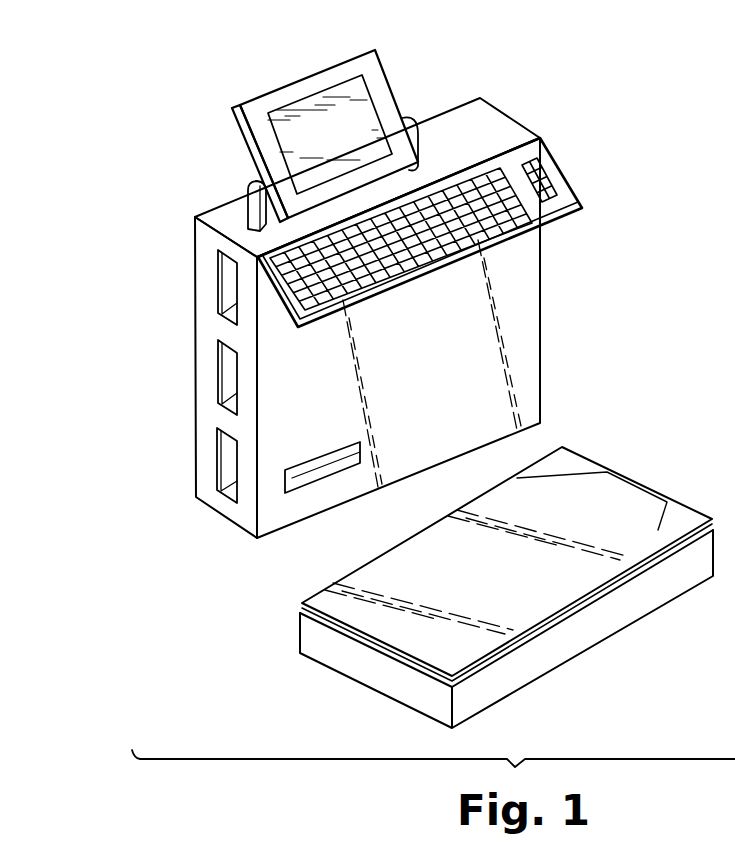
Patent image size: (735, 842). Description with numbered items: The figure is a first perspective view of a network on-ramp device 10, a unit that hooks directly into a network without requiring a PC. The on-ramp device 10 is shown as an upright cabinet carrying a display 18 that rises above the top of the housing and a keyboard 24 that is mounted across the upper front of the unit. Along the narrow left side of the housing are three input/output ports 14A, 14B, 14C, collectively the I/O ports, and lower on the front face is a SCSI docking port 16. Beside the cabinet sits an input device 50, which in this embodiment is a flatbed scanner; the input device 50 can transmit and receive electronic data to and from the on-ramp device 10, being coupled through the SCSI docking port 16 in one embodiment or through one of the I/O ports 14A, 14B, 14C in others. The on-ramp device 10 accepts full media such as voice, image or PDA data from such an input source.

The network on-ramp device 10 is at (201, 147).
The input/output port 14A is at (228, 291).
The input/output port 14B is at (228, 372).
The input/output port 14C is at (228, 460).
The SCSI docking port 16 is at (302, 477).
The display 18 is at (383, 98).
The keyboard 24 is at (563, 180).
The input device 50 is at (352, 660).